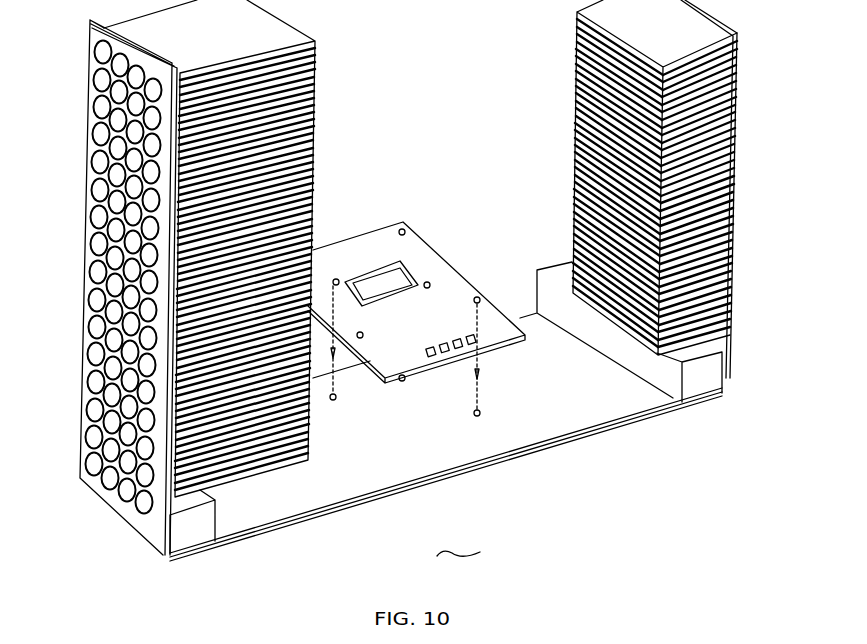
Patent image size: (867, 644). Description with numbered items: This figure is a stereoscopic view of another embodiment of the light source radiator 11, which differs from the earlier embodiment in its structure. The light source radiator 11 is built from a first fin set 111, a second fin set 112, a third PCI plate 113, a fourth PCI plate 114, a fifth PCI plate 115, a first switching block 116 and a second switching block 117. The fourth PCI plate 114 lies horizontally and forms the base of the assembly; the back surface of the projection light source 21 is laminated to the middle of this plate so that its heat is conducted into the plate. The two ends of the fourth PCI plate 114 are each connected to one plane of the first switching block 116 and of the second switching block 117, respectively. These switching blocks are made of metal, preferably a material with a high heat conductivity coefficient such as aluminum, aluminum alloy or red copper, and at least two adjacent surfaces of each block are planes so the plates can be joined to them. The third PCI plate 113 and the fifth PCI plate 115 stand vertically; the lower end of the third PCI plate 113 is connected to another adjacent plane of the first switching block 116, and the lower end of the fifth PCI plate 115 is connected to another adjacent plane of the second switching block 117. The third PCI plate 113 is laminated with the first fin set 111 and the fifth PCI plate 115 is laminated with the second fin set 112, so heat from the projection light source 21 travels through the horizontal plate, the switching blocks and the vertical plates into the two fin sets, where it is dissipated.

The light source radiator 11 is at (458, 540).
The projection light source 21 is at (413, 249).
The first fin set 111 is at (317, 125).
The second fin set 112 is at (577, 30).
The third PCI plate 113 is at (315, 97).
The fourth PCI plate 114 is at (530, 437).
The fifth PCI plate 115 is at (728, 380).
The first switching block 116 is at (196, 524).
The second switching block 117 is at (698, 384).